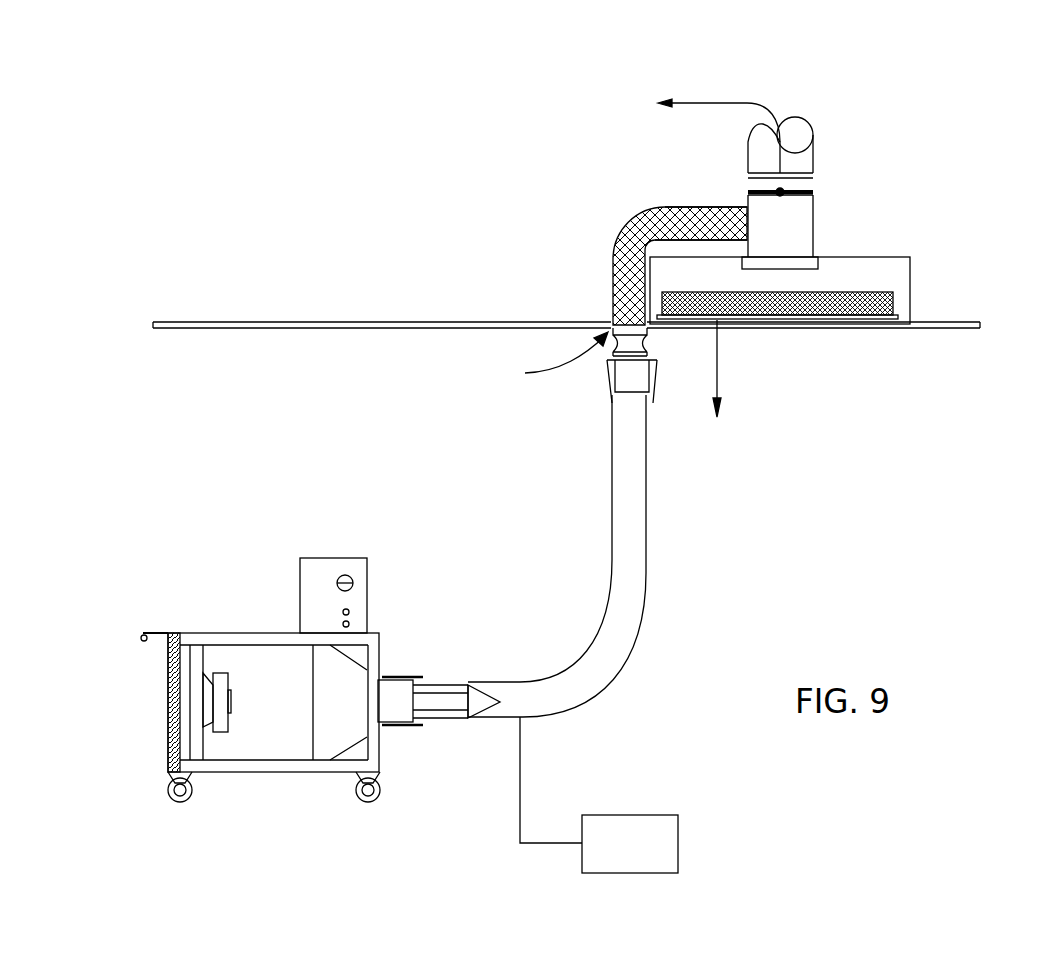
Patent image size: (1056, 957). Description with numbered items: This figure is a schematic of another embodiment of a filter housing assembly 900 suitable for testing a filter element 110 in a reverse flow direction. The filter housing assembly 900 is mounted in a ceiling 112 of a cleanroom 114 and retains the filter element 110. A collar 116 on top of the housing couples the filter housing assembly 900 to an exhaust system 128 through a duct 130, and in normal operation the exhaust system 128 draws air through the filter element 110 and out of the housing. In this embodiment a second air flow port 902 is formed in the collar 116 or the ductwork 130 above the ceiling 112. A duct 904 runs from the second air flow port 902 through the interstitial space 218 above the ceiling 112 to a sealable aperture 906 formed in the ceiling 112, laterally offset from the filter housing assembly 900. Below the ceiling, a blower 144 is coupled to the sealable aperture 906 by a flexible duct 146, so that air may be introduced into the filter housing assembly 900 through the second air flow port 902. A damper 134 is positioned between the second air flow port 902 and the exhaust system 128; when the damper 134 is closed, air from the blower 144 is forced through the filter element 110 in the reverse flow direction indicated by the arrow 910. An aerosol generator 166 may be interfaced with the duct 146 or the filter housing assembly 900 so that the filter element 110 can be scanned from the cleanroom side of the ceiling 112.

The filter element 110 is at (802, 316).
The ceiling 112 is at (453, 320).
The cleanroom 114 is at (792, 495).
The collar 116 is at (813, 231).
The exhaust system 128 is at (666, 100).
The duct 130 is at (758, 147).
The damper 134 is at (799, 192).
The blower 144 is at (297, 597).
The duct 146 is at (612, 492).
The aerosol generator 166 is at (616, 855).
The interstitial space 218 is at (400, 238).
The filter housing assembly 900 is at (910, 277).
The second air flow port 902 is at (716, 207).
The duct 904 is at (625, 222).
The sealable aperture 906 is at (568, 365).
The arrow 910 is at (717, 368).